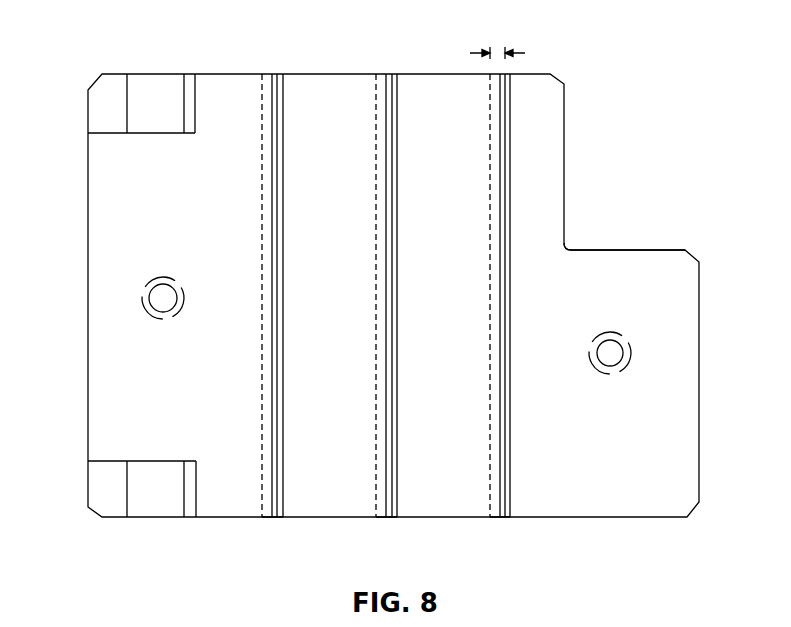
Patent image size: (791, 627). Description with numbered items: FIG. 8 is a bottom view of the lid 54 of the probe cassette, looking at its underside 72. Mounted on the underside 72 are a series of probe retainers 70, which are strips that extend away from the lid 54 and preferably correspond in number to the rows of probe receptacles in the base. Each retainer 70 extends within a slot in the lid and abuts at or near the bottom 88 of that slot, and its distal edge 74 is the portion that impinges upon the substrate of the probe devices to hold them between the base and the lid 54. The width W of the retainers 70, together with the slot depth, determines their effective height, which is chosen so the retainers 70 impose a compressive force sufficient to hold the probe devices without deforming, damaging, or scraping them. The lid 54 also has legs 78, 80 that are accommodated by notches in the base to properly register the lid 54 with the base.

The underside 72 is at (657, 408).
The leg 78 is at (148, 100).
The leg 80 is at (143, 472).
The distal edge 74 is at (283, 228).
The bottom 88 is at (487, 432).
The probe retainer 70 is at (278, 517).
The lid 54 is at (627, 250).
The width W is at (500, 52).